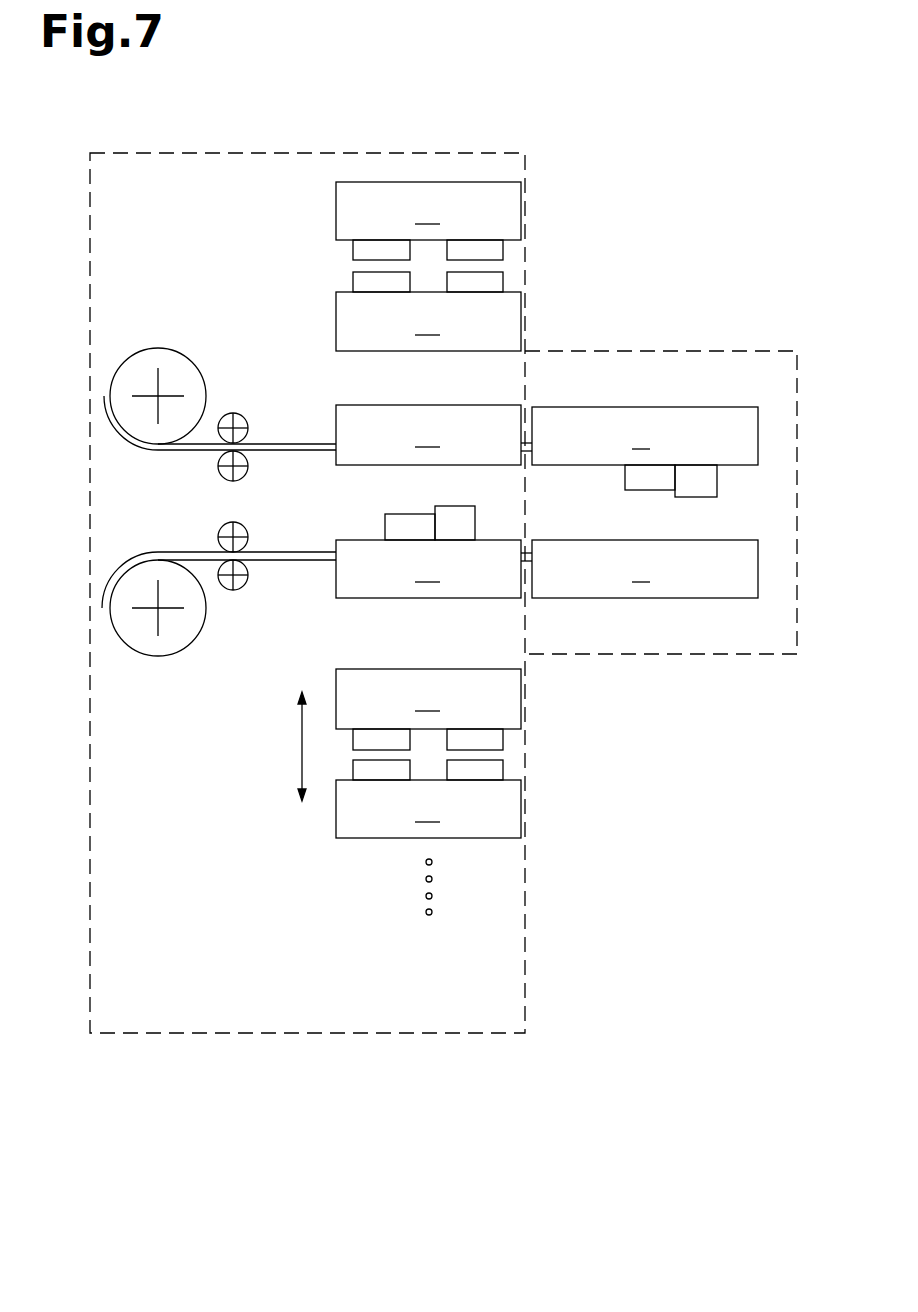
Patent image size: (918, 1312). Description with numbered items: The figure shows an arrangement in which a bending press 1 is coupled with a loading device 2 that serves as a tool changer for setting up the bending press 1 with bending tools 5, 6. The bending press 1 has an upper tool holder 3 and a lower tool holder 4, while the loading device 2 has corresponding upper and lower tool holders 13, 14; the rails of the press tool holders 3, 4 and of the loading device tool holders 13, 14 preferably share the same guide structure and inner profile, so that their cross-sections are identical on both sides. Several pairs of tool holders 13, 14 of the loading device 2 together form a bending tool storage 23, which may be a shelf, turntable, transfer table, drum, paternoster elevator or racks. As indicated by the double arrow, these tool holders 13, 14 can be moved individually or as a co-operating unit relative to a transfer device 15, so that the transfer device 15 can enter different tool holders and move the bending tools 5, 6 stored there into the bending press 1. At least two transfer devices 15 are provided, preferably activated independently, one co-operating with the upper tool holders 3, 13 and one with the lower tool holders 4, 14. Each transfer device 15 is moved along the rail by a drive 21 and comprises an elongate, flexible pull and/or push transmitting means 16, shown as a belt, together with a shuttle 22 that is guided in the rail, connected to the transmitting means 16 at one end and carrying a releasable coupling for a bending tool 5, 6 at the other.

The bending press 1 is at (720, 655).
The loading device 2 is at (390, 1035).
The upper tool holder 3 is at (639, 436).
The lower tool holder 4 is at (639, 569).
The bending tool 5 is at (503, 250).
The bending tool 6 is at (503, 280).
The upper tool holder 13 is at (428, 455).
The lower tool holder 14 is at (428, 565).
The transfer device 15 is at (290, 350).
The pull and/or push transmitting means 16 is at (283, 440).
The drive 21 is at (232, 412).
The shuttle 22 is at (410, 514).
The bending tool storage 23 is at (323, 803).